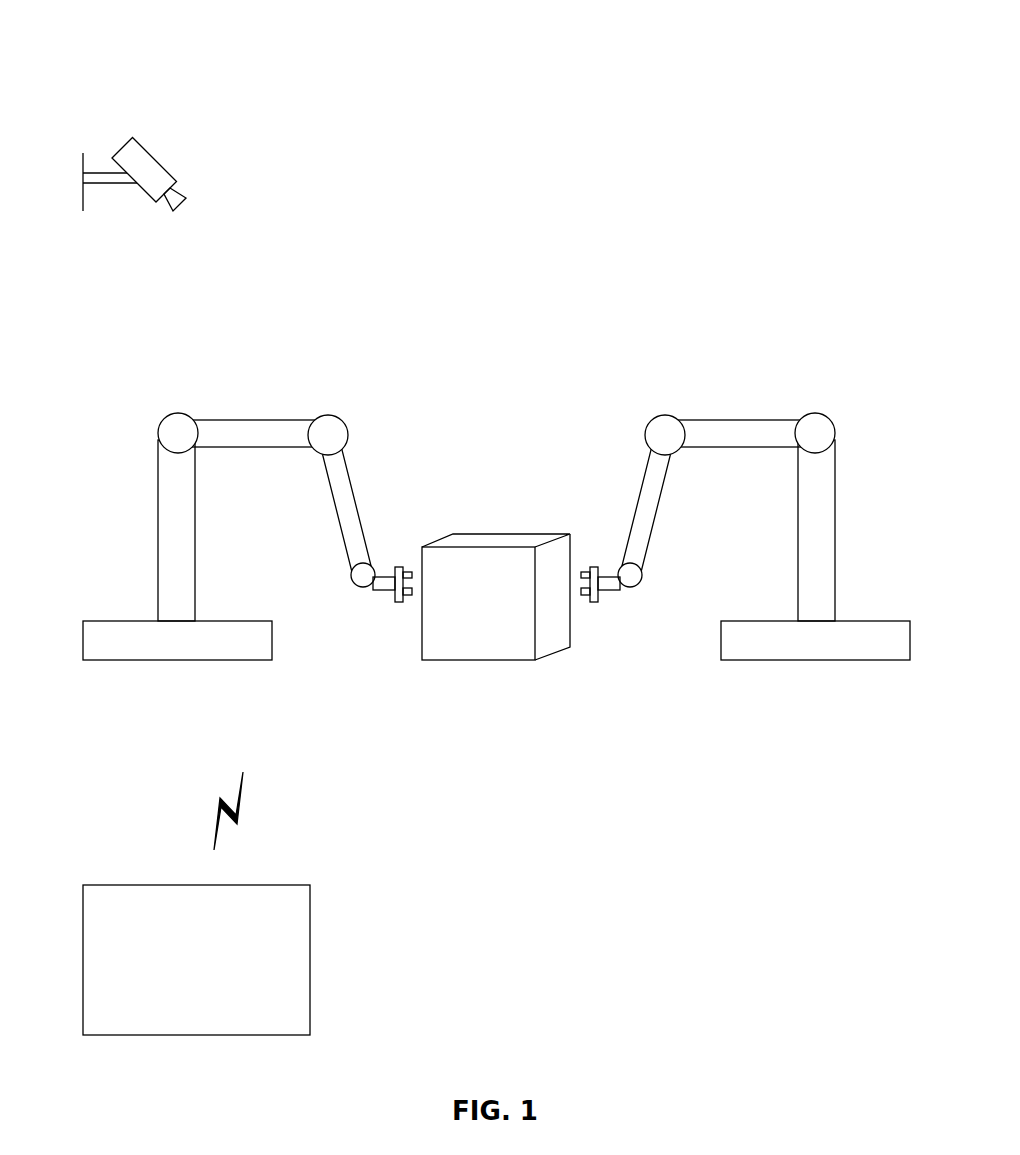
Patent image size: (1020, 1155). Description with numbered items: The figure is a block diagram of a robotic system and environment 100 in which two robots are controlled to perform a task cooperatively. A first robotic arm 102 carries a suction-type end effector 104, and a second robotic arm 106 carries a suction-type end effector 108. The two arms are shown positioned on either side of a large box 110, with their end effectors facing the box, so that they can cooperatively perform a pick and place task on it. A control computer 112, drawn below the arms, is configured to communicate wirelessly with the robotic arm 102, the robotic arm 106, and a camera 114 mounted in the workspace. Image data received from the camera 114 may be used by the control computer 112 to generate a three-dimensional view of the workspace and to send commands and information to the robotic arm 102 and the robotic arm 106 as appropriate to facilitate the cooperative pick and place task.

The system and environment 100 is at (170, 36).
The first robotic arm 102 is at (160, 533).
The suction-type end effector 104 is at (398, 605).
The second robotic arm 106 is at (835, 515).
The suction-type end effector 108 is at (592, 607).
The large box 110 is at (475, 543).
The control computer 112 is at (310, 935).
The camera 114 is at (157, 159).